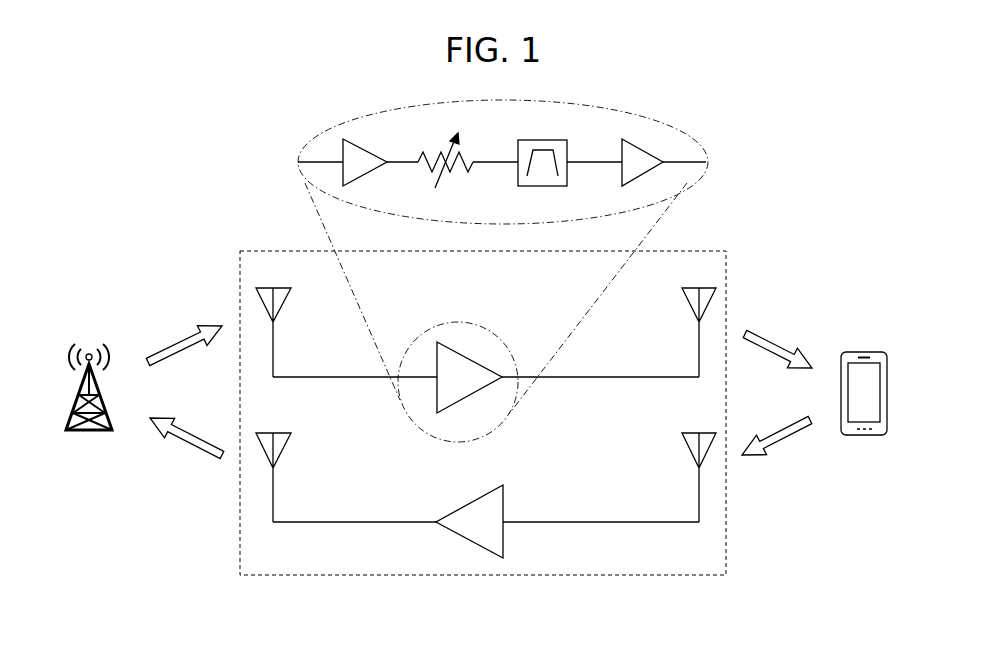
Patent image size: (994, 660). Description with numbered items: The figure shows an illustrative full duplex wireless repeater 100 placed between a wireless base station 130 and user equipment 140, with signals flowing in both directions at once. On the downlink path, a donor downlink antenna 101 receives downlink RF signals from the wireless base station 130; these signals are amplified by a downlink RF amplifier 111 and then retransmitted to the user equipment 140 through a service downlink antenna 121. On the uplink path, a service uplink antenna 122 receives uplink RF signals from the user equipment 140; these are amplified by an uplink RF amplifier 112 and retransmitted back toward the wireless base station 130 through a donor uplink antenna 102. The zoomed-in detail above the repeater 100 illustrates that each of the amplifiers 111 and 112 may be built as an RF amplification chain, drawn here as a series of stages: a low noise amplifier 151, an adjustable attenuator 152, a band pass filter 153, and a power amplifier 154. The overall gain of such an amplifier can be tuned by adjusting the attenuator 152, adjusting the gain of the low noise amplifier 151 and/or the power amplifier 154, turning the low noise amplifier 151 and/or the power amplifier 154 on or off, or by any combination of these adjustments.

The full duplex wireless repeater 100 is at (270, 242).
The donor downlink antenna 101 is at (273, 320).
The donor uplink antenna 102 is at (273, 466).
The downlink RF amplifier 111 is at (469, 377).
The uplink RF amplifier 112 is at (467, 521).
The service downlink antenna 121 is at (697, 320).
The service uplink antenna 122 is at (697, 466).
The wireless base station 130 is at (89, 374).
The user equipment 140 is at (864, 379).
The low noise amplifier 151 is at (367, 170).
The adjustable attenuator 152 is at (448, 167).
The band pass filter 153 is at (542, 175).
The power amplifier 154 is at (646, 168).